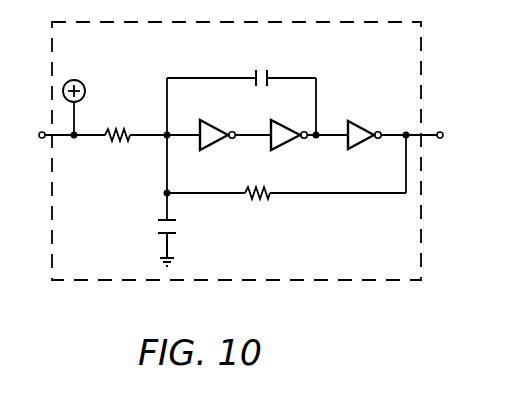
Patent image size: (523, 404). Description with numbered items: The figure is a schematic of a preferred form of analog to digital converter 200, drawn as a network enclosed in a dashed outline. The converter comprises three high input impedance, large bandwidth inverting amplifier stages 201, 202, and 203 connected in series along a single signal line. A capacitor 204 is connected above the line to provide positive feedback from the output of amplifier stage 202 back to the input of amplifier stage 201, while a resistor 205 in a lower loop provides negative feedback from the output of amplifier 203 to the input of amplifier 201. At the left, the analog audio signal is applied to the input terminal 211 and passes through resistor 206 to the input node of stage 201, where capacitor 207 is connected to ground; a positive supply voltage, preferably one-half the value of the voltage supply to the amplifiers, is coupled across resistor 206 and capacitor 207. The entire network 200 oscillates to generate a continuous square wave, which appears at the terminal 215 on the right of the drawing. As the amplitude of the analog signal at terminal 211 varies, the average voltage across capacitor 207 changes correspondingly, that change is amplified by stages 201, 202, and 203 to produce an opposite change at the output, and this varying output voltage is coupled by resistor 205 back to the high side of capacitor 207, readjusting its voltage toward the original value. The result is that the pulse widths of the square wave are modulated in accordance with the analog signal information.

The analog to digital converter 200 is at (333, 271).
The inverting amplifier stage 201 is at (200, 119).
The inverting amplifier stage 202 is at (271, 121).
The inverting amplifier stage 203 is at (348, 121).
The capacitor 204 is at (268, 68).
The resistor 205 is at (254, 186).
The resistor 206 is at (109, 130).
The capacitor 207 is at (181, 232).
The input terminal 211 is at (40, 137).
The output terminal 215 is at (443, 126).